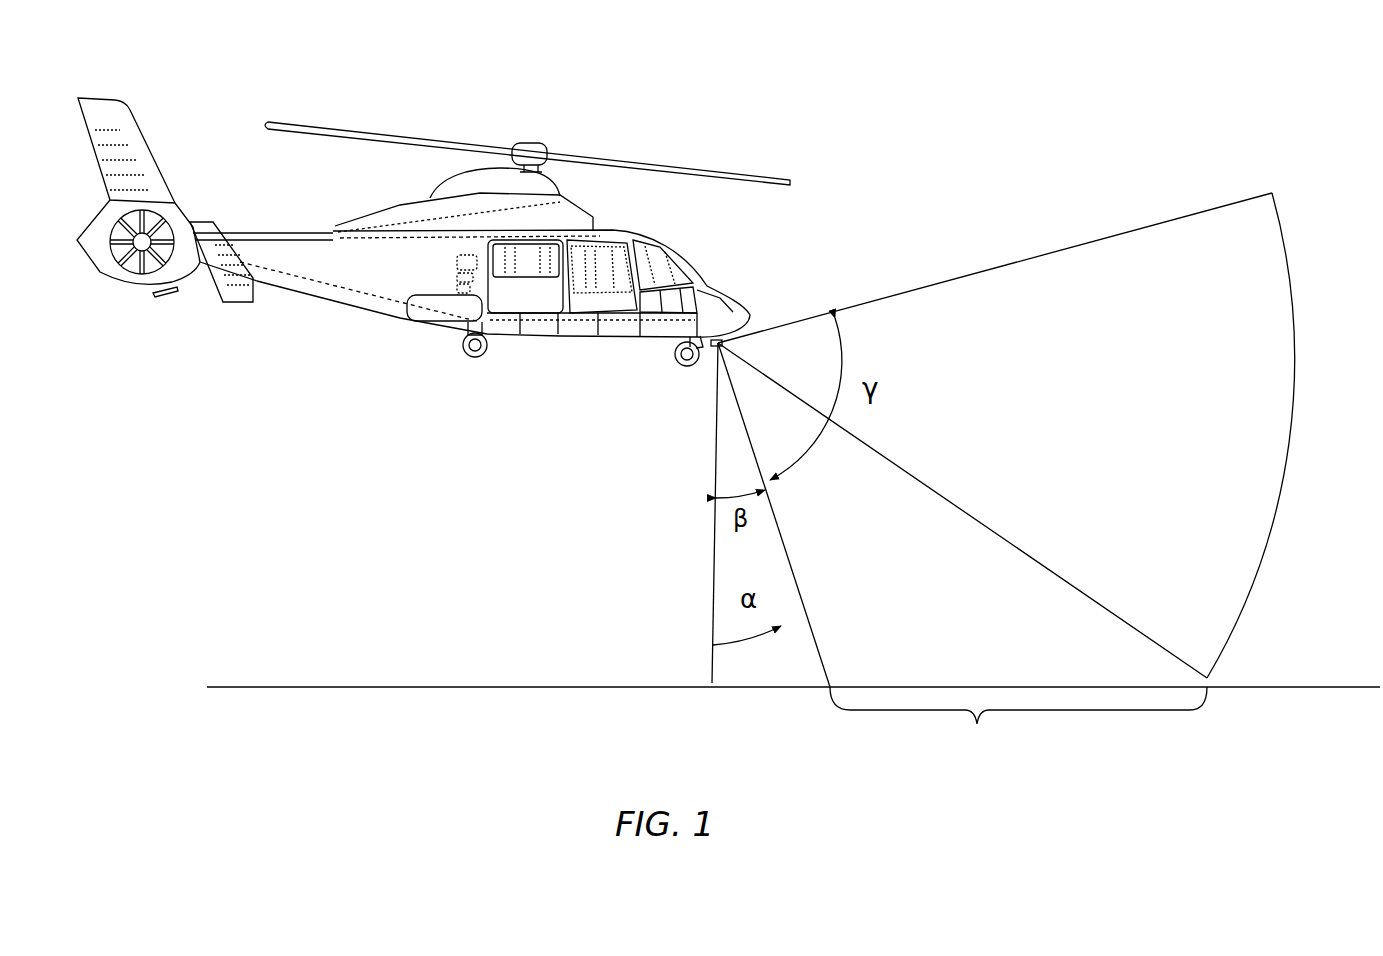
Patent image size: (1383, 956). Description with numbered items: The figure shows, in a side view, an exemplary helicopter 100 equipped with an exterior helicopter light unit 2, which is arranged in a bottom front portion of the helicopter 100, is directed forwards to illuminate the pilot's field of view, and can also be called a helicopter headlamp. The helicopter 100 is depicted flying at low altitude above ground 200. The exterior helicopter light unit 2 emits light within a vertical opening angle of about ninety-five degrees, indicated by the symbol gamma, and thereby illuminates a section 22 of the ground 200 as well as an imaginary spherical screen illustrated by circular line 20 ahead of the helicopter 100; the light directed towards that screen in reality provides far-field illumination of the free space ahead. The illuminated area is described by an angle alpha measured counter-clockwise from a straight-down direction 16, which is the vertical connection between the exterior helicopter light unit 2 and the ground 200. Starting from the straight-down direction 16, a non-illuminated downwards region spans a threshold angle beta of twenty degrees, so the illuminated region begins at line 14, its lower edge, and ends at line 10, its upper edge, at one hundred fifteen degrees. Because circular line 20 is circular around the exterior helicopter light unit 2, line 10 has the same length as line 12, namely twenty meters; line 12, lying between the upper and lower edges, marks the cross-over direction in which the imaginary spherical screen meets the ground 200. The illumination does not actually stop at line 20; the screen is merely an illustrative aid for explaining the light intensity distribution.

The helicopter 100 is at (430, 374).
The exterior helicopter light unit 2 is at (716, 348).
The line 10 is at (1092, 241).
The line 12 is at (958, 507).
The line 14 is at (803, 601).
The straight-down direction 16 is at (710, 557).
The circular line 20 is at (1291, 417).
The section 22 is at (1018, 725).
The ground 200 is at (362, 688).